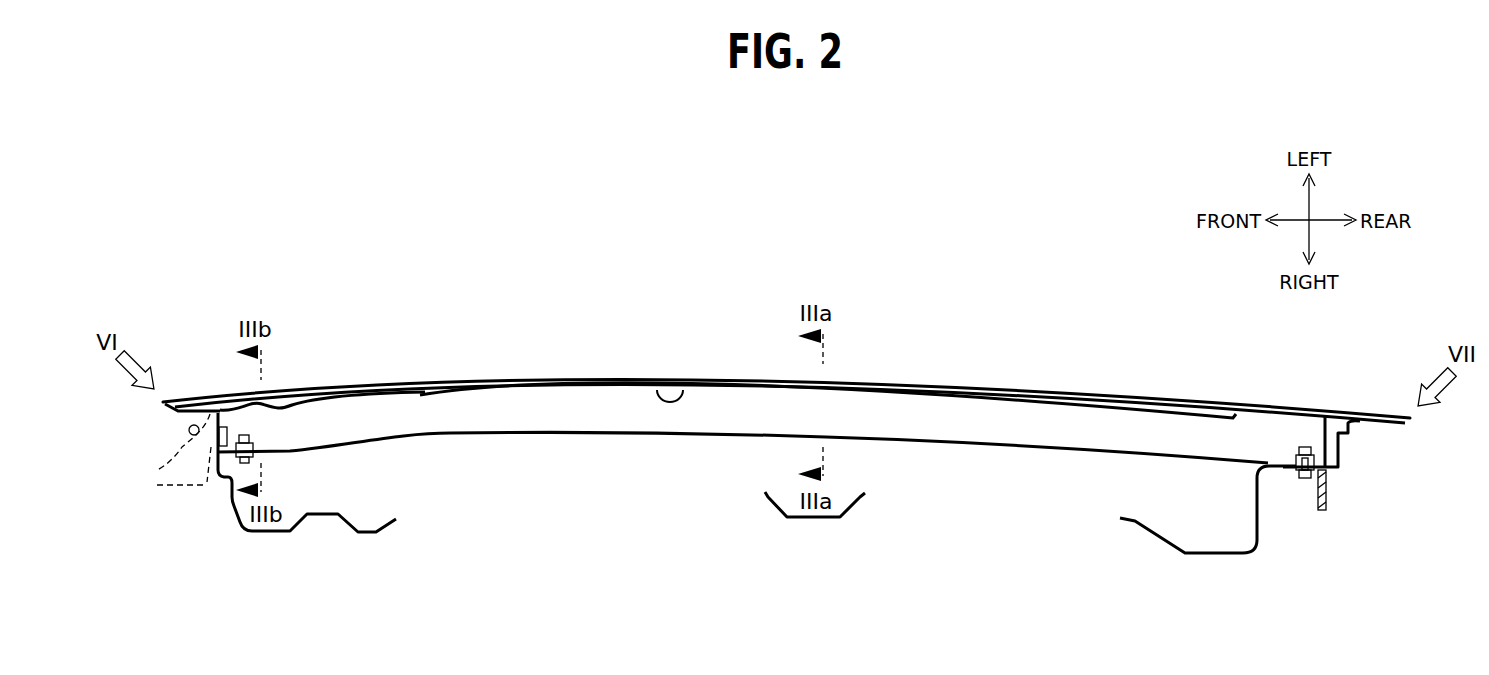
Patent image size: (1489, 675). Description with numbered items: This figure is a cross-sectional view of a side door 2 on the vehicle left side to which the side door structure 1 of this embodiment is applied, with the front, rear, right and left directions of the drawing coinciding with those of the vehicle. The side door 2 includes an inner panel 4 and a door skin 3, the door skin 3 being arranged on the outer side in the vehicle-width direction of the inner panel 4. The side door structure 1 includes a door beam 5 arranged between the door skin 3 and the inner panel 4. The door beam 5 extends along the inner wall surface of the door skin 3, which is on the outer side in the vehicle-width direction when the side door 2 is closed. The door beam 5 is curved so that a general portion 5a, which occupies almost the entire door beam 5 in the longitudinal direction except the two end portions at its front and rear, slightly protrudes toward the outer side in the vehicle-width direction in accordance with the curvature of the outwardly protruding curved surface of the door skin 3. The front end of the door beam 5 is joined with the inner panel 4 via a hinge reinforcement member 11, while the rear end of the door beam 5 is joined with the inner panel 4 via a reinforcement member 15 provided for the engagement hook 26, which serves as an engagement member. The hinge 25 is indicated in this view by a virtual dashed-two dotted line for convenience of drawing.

The side door structure 1 is at (919, 318).
The side door 2 is at (452, 322).
The door skin 3 is at (317, 388).
The inner panel 4 is at (337, 513).
The door beam 5 is at (450, 433).
The general portion 5a is at (682, 387).
The hinge reinforcement member 11 is at (228, 420).
The reinforcement member 15 is at (1322, 431).
The hinge 25 is at (175, 483).
The engagement hook 26 is at (1327, 497).